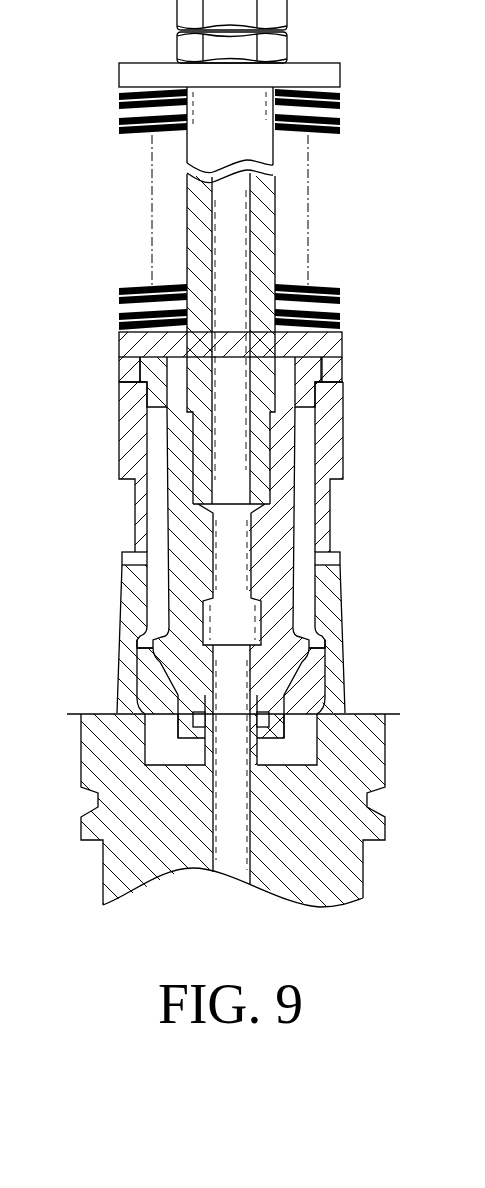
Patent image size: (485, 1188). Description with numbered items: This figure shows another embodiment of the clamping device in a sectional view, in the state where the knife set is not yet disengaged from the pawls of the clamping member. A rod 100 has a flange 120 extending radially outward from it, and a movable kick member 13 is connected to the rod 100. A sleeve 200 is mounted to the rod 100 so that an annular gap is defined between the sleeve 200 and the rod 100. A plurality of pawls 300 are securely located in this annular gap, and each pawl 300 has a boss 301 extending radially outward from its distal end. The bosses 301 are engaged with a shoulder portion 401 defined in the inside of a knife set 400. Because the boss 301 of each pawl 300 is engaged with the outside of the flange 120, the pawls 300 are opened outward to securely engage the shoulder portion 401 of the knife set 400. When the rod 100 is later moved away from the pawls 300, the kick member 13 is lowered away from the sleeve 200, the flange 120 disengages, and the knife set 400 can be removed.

The kick member 13 is at (190, 238).
The sleeve 200 is at (133, 412).
The rod 100 is at (180, 528).
The pawls 300 is at (157, 593).
The boss 301 is at (148, 643).
The flange 120 is at (165, 668).
The knife set 400 is at (333, 595).
The shoulder portion 401 is at (332, 663).